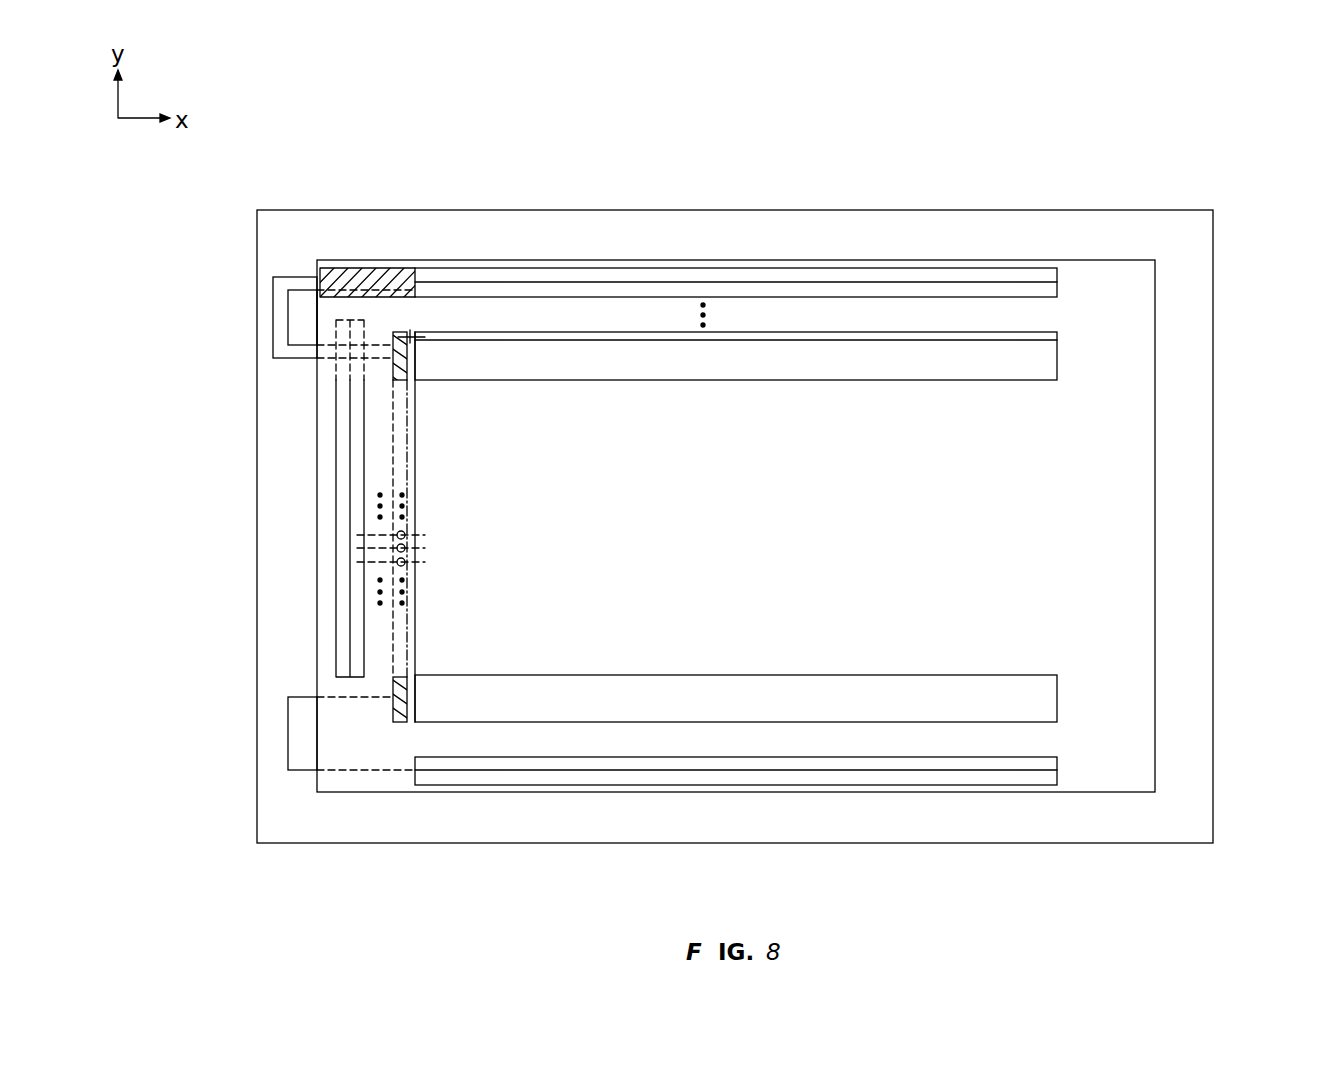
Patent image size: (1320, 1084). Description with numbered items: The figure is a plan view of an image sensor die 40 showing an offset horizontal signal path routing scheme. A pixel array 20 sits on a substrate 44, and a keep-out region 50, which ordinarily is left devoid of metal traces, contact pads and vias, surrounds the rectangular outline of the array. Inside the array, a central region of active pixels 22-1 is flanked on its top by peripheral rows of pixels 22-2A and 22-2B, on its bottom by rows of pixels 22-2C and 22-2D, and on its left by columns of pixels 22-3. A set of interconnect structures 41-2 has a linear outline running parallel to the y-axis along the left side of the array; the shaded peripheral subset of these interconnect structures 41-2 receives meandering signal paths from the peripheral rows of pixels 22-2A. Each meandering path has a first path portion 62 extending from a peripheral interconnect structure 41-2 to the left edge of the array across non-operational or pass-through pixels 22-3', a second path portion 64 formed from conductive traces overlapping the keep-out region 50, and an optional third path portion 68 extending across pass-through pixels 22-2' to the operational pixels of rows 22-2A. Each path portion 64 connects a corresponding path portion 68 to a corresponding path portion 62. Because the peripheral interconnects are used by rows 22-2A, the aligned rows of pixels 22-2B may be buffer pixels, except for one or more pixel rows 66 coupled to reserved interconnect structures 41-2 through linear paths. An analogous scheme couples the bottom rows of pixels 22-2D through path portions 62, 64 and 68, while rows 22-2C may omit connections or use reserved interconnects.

The image sensor die 40 is at (1138, 133).
The substrate 44 is at (1214, 232).
The pixel array 20 is at (1157, 468).
The central region of active pixels 22-1 is at (740, 530).
The peripheral rows of pixels 22-2A is at (1065, 268).
The peripheral rows of pixels 22-2B is at (1065, 332).
The rows of pixels 22-2C is at (1065, 675).
The peripheral rows of pixels 22-2D is at (1065, 722).
The non-operational or pass-through pixels 22-2' is at (393, 218).
The columns of pixels 22-3 is at (365, 580).
The non-operational or pass-through pixels 22-3' is at (255, 387).
The set of interconnect structures 41-2 is at (404, 723).
The keep-out region 50 is at (297, 548).
The first path portion 62 is at (371, 346).
The second path portion 64 is at (288, 317).
The pixel rows 66 is at (645, 336).
The third path portion 68 is at (352, 268).